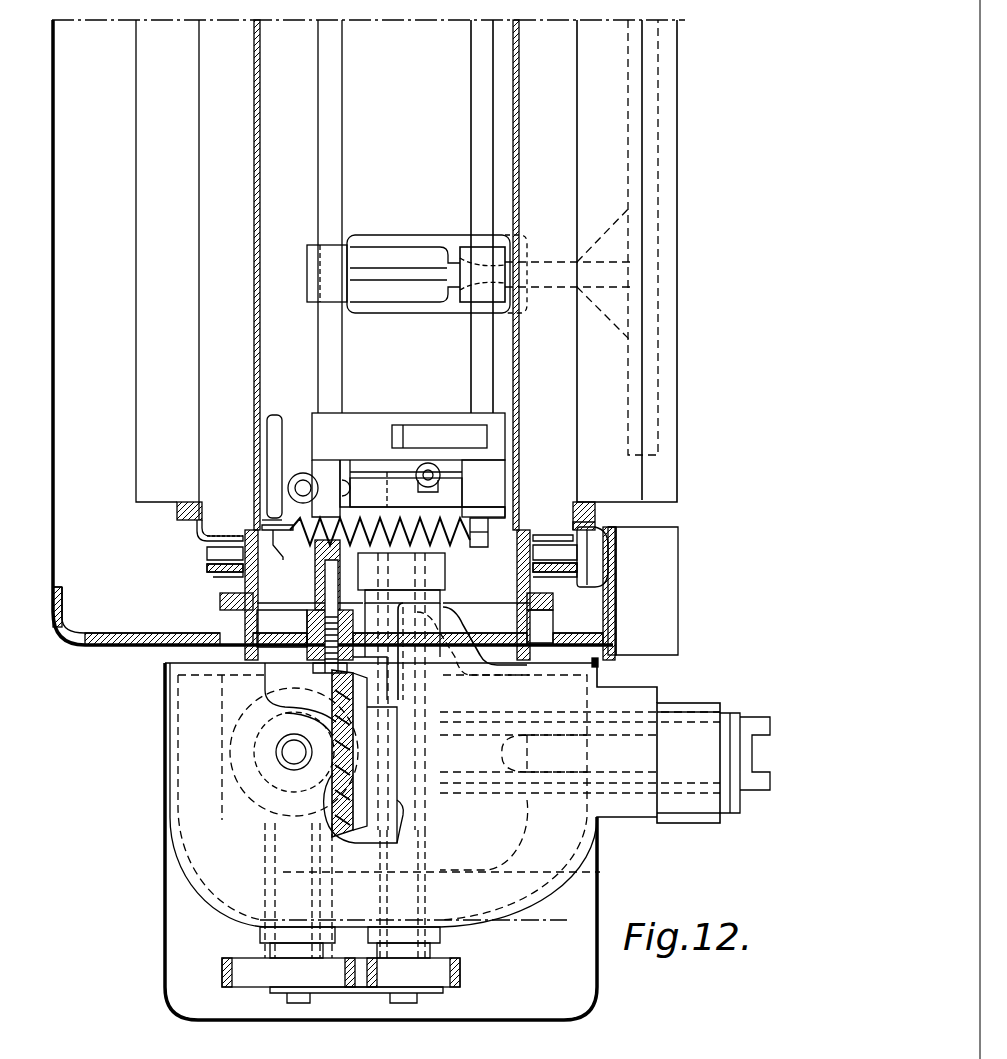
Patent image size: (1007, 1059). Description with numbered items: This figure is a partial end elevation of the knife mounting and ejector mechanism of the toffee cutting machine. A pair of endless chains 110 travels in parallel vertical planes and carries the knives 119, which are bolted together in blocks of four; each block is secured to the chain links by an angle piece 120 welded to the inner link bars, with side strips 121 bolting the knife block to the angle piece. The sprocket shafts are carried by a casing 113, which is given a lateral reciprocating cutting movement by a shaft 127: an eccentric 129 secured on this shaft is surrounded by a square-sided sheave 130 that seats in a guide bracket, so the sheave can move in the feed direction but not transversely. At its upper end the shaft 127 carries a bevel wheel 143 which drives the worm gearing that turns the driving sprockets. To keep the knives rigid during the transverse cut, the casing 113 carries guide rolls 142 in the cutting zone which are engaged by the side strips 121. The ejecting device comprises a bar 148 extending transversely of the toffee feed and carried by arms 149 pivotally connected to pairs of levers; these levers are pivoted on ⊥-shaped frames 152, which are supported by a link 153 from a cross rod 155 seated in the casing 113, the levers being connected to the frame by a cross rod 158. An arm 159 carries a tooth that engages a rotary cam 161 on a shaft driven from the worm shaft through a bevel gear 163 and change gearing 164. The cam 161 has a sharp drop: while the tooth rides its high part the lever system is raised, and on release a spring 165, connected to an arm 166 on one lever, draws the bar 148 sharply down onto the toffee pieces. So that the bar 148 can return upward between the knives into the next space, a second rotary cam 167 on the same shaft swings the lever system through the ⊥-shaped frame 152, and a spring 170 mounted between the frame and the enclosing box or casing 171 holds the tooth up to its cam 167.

The endless chains 110 is at (210, 565).
The casing 113 is at (53, 438).
The knives 119 is at (140, 352).
The angle piece 120 is at (205, 540).
The side strips 121 is at (177, 512).
The shaft 127 is at (612, 780).
The eccentric 129 is at (703, 797).
The sheave 130 is at (673, 817).
The guide rolls 142 is at (590, 555).
The bevel wheel 143 is at (335, 757).
The ejector bar 148 is at (653, 330).
The arms 149 is at (398, 255).
The ⊥-shaped frames 152 is at (447, 425).
The link 153 is at (380, 413).
The cross rod 155 is at (326, 192).
The cross rod 158 is at (480, 138).
The arm 159 is at (303, 472).
The rotary cam 161 is at (450, 487).
The bevel gear 163 is at (250, 805).
The change gearing 164 is at (437, 978).
The spring 165 is at (295, 537).
The arm 166 is at (490, 507).
The rotary cam 167 is at (425, 575).
The spring 170 is at (428, 463).
The enclosing box or casing 171 is at (254, 297).